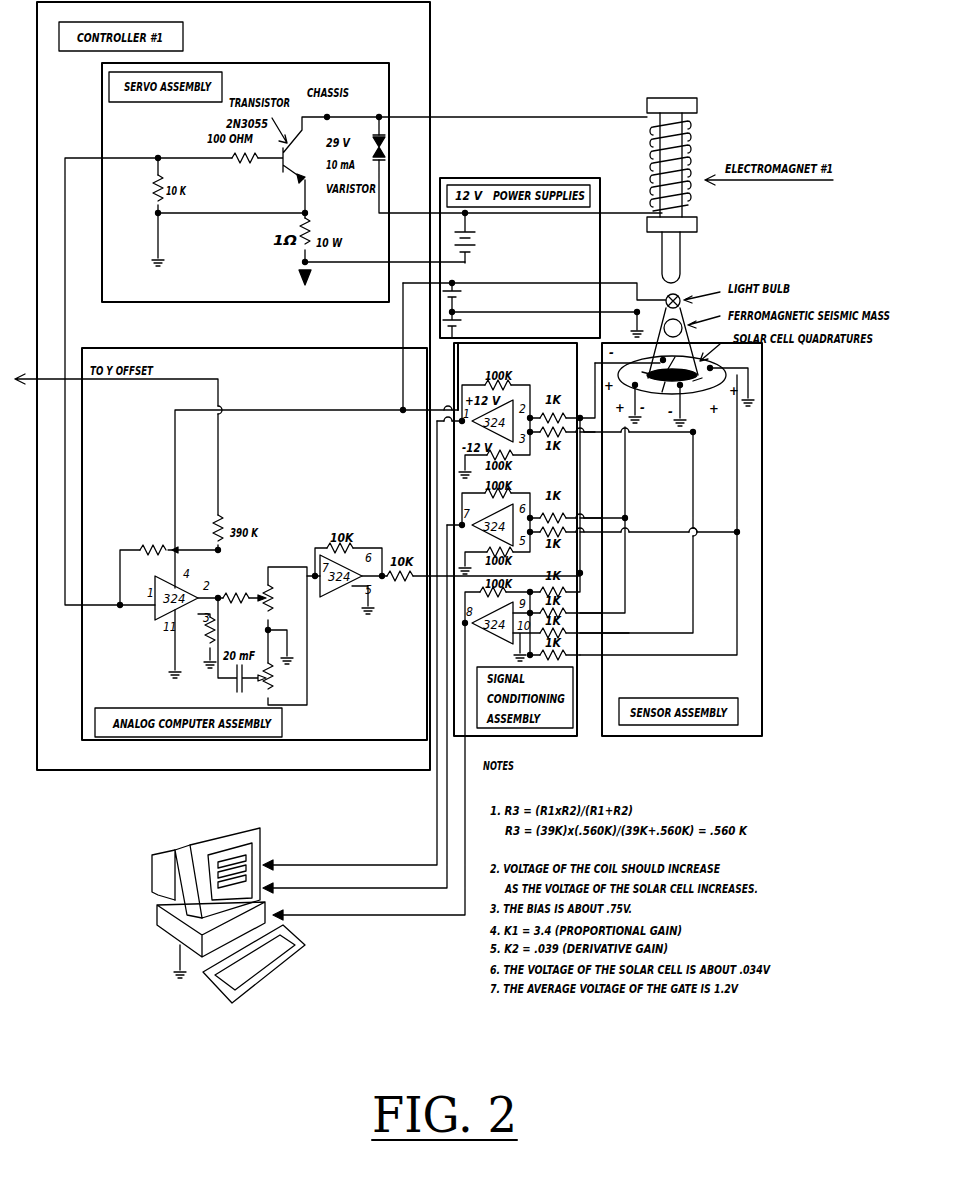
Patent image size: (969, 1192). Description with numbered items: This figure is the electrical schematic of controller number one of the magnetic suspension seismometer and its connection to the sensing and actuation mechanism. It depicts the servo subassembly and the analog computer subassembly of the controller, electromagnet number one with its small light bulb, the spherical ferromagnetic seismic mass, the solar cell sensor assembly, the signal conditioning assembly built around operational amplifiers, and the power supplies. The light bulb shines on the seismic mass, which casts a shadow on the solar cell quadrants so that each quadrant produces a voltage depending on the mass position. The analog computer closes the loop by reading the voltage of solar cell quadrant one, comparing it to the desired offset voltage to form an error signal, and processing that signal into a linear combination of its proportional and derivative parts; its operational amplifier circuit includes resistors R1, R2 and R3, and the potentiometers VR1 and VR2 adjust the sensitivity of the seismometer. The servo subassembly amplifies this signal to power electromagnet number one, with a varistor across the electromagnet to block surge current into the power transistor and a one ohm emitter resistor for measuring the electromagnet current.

The resistor R1 560 ohm R1 is at (232, 577).
The resistor R2 39K R2 is at (169, 559).
The resistor R3 is at (200, 641).
The potentiometer VR1 is at (285, 636).
The potentiometer VR2 is at (283, 683).